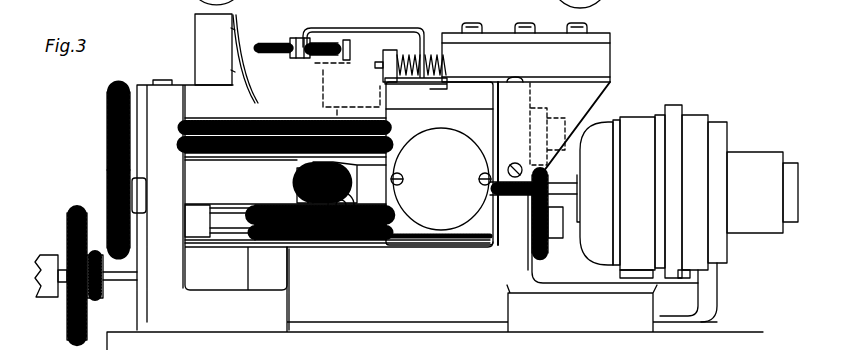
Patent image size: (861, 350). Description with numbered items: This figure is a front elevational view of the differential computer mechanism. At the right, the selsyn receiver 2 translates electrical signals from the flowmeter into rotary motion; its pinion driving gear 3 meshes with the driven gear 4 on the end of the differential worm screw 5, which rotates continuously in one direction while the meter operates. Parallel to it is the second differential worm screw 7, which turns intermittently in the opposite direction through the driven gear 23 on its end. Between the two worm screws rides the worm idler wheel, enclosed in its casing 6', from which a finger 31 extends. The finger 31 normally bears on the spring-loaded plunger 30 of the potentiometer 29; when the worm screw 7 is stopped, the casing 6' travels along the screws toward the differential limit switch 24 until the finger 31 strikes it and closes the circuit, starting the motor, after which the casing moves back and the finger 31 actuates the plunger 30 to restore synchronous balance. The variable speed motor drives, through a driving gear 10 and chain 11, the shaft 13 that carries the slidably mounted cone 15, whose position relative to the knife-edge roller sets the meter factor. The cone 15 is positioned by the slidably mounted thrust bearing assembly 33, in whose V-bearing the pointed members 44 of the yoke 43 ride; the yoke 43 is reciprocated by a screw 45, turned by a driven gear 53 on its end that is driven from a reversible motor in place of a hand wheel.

The selsyn receiver 2 is at (642, 196).
The pinion driving gear 3 is at (545, 183).
The driven gear 4 is at (548, 254).
The differential worm screw 5 is at (368, 241).
The casing 6' is at (441, 173).
The second differential worm screw 7 is at (283, 119).
The driving gear 10 is at (107, 187).
The chain 11 is at (107, 146).
The shaft 13 is at (241, 172).
The cone 15 is at (349, 182).
The driven gear 23 is at (547, 108).
The differential limit switch 24 is at (249, 48).
The potentiometer 29 is at (570, 74).
The spring-loaded plunger 30 is at (387, 47).
The finger 31 is at (386, 95).
The thrust bearing assembly 33 is at (286, 180).
The yoke 43 is at (343, 244).
The pointed members 44 is at (352, 202).
The screw 45 is at (113, 284).
The driven gear 53 is at (67, 334).